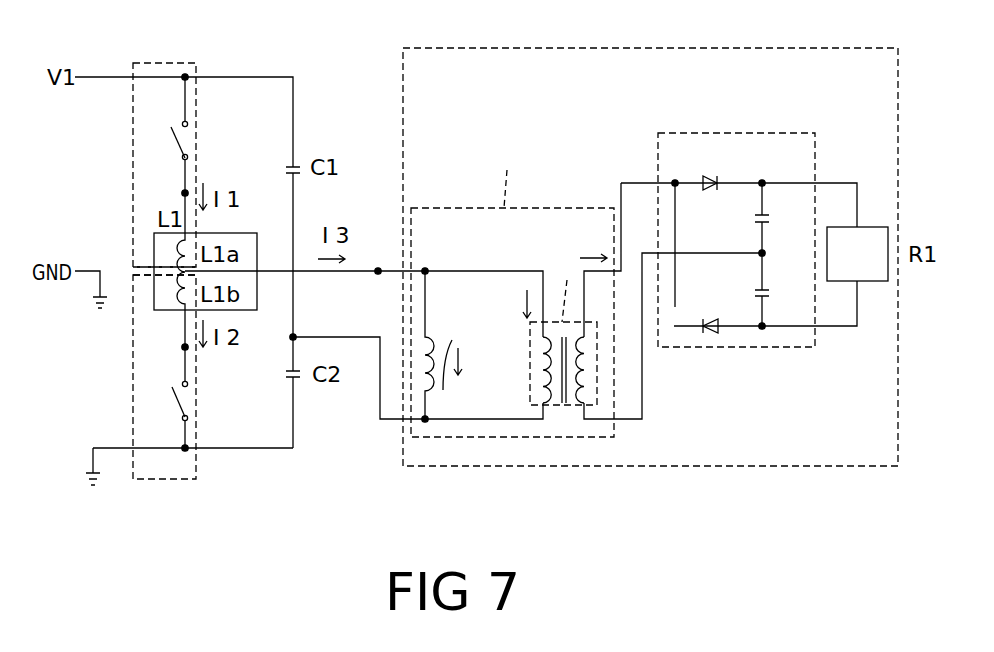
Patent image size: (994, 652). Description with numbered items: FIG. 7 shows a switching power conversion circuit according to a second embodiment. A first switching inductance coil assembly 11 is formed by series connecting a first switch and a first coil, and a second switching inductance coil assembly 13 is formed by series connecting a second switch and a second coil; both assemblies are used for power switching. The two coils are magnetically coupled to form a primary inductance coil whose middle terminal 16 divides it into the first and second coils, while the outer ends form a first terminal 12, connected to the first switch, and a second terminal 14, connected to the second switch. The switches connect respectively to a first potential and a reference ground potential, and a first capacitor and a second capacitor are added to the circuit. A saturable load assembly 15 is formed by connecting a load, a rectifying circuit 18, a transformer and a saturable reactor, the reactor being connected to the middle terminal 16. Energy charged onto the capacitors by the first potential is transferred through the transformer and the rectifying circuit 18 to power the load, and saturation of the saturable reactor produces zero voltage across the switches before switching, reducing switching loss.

The first switching inductance coil assembly 11 is at (196, 63).
The first terminal 12 is at (185, 193).
The second switching inductance coil assembly 13 is at (193, 462).
The second terminal 14 is at (185, 347).
The saturable load assembly 15 is at (706, 466).
The middle terminal 16 is at (378, 271).
The rectifying circuit 18 is at (745, 133).